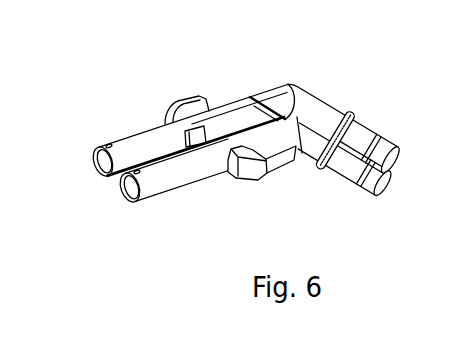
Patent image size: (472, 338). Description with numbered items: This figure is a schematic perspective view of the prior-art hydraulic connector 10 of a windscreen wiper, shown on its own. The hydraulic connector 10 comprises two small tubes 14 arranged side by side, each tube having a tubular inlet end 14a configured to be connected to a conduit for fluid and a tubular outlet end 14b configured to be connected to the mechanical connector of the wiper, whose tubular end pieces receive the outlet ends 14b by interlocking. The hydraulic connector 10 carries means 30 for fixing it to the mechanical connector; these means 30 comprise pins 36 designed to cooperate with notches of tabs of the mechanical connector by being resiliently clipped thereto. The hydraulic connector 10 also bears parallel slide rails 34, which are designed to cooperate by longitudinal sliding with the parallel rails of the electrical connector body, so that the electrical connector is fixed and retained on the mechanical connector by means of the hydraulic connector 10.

The hydraulic connector 10 is at (239, 128).
The small tubes 14 is at (241, 113).
The tubular inlet end 14a is at (398, 150).
The tubular outlet end 14b is at (120, 183).
The means for fixing the hydraulic connector to the mechanical connector 30 is at (204, 133).
The pins 36 is at (181, 100).
The slide rails 34 is at (283, 163).